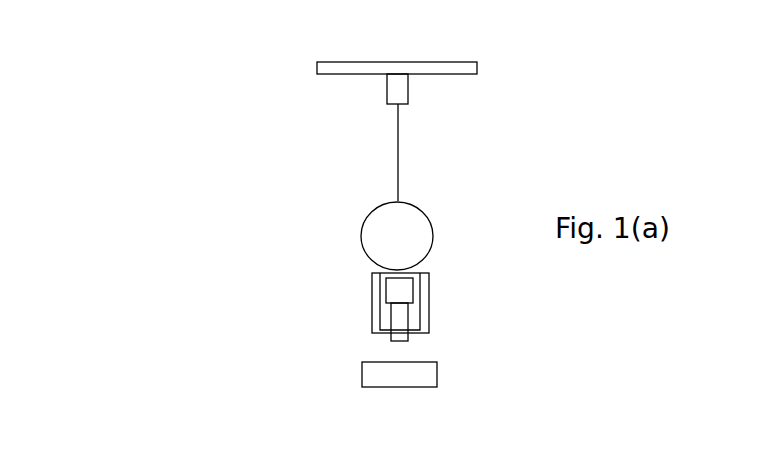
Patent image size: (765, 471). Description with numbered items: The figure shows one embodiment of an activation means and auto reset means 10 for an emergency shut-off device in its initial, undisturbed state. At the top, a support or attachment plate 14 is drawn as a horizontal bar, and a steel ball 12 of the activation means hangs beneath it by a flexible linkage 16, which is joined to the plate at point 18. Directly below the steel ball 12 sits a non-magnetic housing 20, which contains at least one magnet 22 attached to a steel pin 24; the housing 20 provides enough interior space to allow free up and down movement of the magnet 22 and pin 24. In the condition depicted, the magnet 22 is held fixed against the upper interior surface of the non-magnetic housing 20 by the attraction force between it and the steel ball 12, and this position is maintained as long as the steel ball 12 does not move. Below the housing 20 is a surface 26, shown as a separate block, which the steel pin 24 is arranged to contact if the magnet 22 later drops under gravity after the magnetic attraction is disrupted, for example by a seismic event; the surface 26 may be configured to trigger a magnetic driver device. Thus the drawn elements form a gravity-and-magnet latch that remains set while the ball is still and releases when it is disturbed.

The activation means and auto reset means 10 is at (193, 68).
The steel ball 12 is at (362, 225).
The attachment plate 14 is at (317, 71).
The flexible linkage 16 is at (397, 143).
The point 18 is at (395, 107).
The non-magnetic housing 20 is at (378, 282).
The magnet 22 is at (397, 290).
The steel pin 24 is at (400, 318).
The surface 26 is at (362, 375).